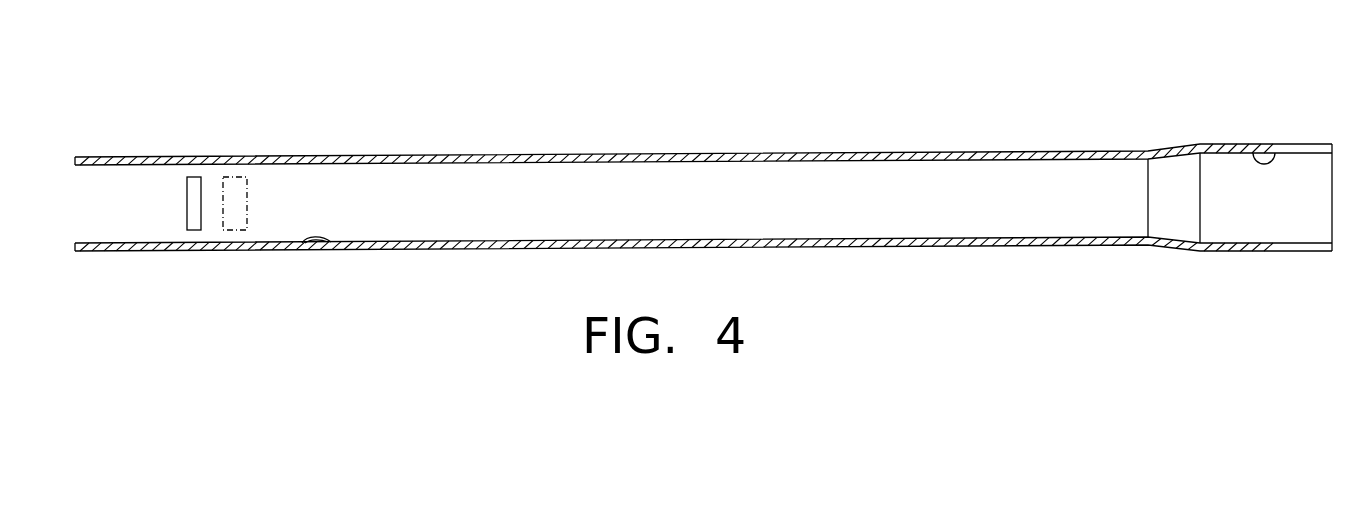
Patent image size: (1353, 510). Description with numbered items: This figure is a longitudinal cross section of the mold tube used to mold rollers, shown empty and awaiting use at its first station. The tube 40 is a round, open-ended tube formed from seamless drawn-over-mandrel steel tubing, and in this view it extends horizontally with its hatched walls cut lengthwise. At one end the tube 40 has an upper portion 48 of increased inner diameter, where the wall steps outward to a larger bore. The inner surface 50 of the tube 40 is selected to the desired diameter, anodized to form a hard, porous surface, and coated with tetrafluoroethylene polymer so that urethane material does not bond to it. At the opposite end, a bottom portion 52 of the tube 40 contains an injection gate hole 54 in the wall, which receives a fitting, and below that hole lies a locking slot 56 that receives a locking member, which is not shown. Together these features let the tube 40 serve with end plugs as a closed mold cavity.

The tube 40 is at (583, 78).
The upper portion 48 is at (1172, 135).
The inner surface 50 is at (1258, 152).
The bottom portion 52 is at (207, 147).
The injection gate hole 54 is at (320, 247).
The locking slot 56 is at (196, 220).